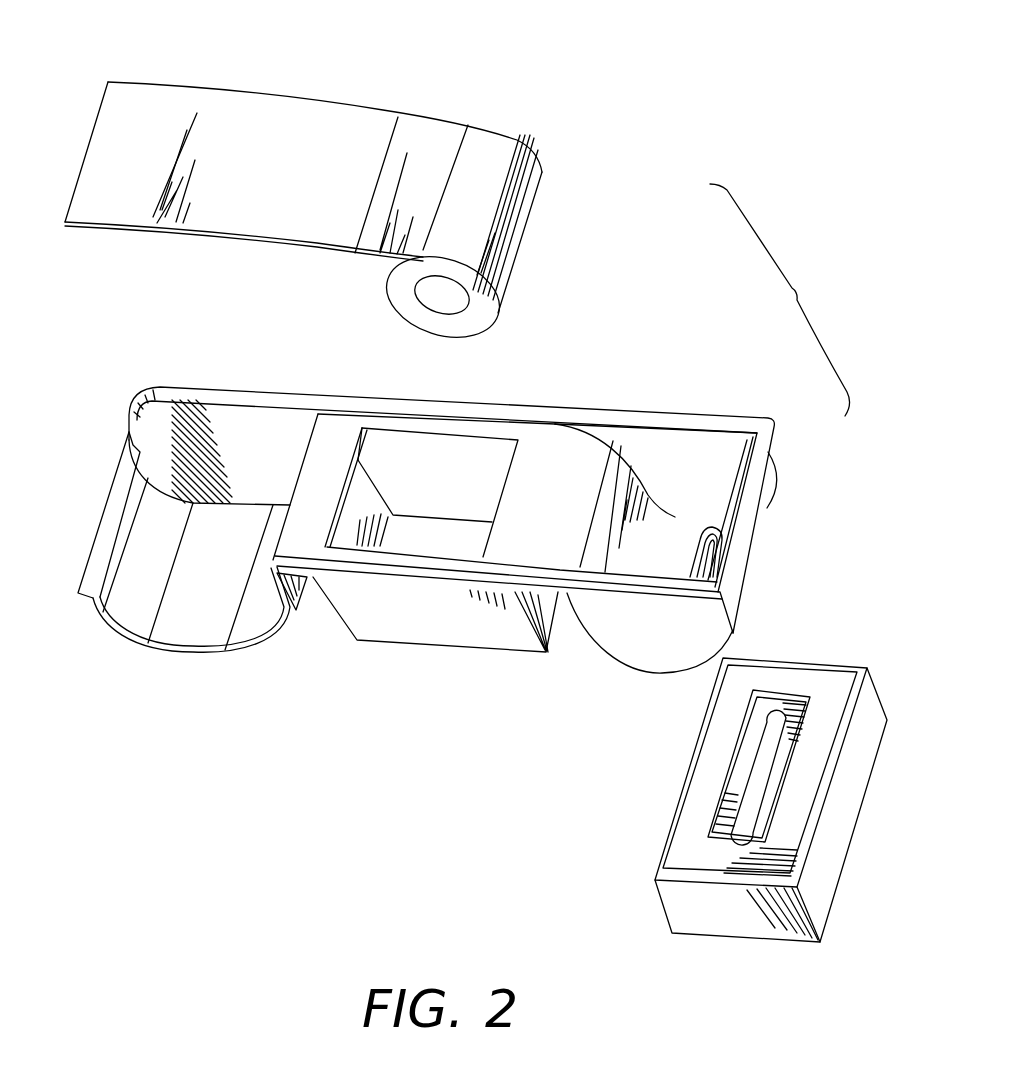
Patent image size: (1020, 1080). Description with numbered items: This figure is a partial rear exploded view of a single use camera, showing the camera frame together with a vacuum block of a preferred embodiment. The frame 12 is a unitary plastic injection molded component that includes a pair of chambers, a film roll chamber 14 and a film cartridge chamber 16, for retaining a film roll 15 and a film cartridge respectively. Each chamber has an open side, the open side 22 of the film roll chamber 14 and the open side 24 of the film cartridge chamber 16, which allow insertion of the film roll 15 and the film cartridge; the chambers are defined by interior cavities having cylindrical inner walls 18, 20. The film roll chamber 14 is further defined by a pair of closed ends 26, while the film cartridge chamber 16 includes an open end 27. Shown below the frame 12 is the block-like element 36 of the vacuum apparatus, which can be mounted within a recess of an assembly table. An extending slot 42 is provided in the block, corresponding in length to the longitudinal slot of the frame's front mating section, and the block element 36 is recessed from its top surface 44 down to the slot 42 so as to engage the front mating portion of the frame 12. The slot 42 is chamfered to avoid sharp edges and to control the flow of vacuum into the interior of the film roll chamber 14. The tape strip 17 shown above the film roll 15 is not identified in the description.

The frame 12 is at (702, 412).
The film roll chamber 14 is at (672, 532).
The film roll 15 is at (485, 157).
The film cartridge chamber 16 is at (183, 543).
The tape strip 17 is at (263, 108).
The cylindrical inner wall 18 is at (655, 525).
The cylindrical inner wall 20 is at (178, 635).
The open side 22 is at (736, 450).
The open side 24 is at (232, 438).
The closed ends 26 is at (671, 443).
The open end 27 is at (251, 637).
The block-like element 36 is at (844, 665).
The extending slot 42 is at (758, 766).
The top surface 44 is at (747, 858).